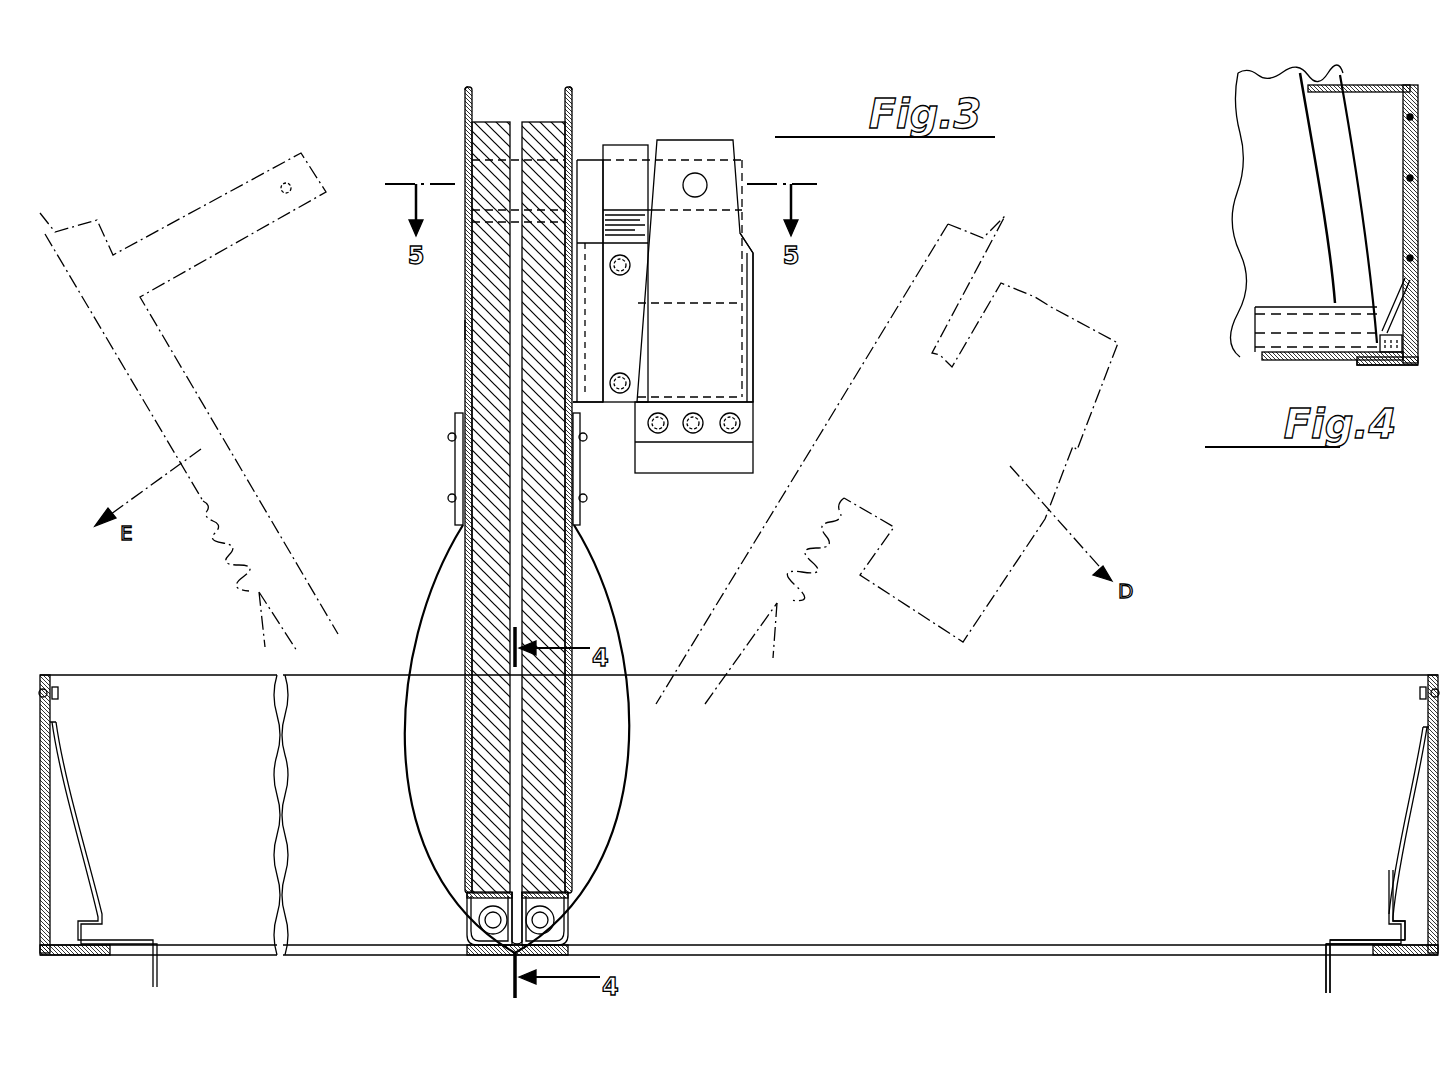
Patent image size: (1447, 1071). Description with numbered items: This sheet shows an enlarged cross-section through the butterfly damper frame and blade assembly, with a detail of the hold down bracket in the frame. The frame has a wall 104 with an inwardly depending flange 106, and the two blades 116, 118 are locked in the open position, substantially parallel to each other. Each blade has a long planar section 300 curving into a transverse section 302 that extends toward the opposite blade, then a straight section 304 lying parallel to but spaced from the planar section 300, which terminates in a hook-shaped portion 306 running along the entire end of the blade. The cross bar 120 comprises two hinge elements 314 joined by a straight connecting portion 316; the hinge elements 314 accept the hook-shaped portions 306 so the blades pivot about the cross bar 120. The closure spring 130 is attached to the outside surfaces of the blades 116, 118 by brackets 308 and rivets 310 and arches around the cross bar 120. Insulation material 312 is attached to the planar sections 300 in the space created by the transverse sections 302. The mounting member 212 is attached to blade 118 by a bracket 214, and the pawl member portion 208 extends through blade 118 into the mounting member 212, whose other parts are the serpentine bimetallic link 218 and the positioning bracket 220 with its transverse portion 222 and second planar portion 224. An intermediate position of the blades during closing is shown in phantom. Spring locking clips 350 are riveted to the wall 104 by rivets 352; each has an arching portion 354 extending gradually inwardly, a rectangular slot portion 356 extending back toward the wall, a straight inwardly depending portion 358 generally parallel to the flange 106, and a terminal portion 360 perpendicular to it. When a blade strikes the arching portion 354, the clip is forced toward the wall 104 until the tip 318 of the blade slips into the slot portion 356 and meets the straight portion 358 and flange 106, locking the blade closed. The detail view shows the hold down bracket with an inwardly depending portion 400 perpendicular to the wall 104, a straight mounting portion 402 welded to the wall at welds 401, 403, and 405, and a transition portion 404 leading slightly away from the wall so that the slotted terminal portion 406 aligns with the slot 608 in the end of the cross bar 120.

In FIG. 3, the wall 104 is at (48, 795).
In FIG. 4, the wall 104 is at (1413, 215).
In FIG. 3, the inwardly depending flange 106 is at (1400, 953).
In FIG. 4, the inwardly depending flange 106 is at (1378, 366).
In FIG. 3, the blade 116 is at (468, 110).
In FIG. 3, the blade 118 is at (540, 127).
In FIG. 3, the cross bar 120 is at (490, 953).
In FIG. 4, the cross bar 120 is at (1263, 335).
In FIG. 3, the closure spring 130 is at (435, 580).
In FIG. 3, the pawl member portion 208 is at (588, 170).
In FIG. 3, the mounting member 212 is at (710, 138).
In FIG. 3, the bracket 214 is at (590, 395).
In FIG. 3, the serpentine bimetallic link 218 is at (728, 270).
In FIG. 3, the positioning bracket 220 is at (757, 290).
In FIG. 3, the transverse portion 222 is at (742, 235).
In FIG. 3, the second planar portion 224 is at (630, 148).
In FIG. 3, the planar section 300 is at (465, 333).
In FIG. 3, the transverse section 302 is at (460, 903).
In FIG. 3, the straight section 304 is at (545, 885).
In FIG. 3, the hook-shaped portion 306 is at (476, 930).
In FIG. 3, the brackets 308 is at (455, 512).
In FIG. 3, the rivets 310 is at (451, 437).
In FIG. 3, the insulation material 312 is at (493, 130).
In FIG. 3, the hinge elements 314 is at (556, 915).
In FIG. 3, the straight connecting portion 316 is at (568, 952).
In FIG. 3, the tip 318 is at (467, 88).
In FIG. 3, the spring locking clip 350 is at (105, 820).
In FIG. 3, the rivets 352 is at (60, 694).
In FIG. 3, the arching portion 354 is at (1389, 868).
In FIG. 3, the rectangular slot portion 356 is at (1400, 935).
In FIG. 3, the straight inwardly depending portion 358 is at (1340, 948).
In FIG. 3, the terminal portion 360 is at (1325, 976).
In FIG. 4, the inwardly depending portion 400 is at (1362, 86).
In FIG. 4, the weld 401 is at (1406, 116).
In FIG. 4, the straight mounting portion 402 is at (1402, 138).
In FIG. 4, the weld 403 is at (1407, 178).
In FIG. 4, the transition portion 404 is at (1397, 297).
In FIG. 4, the weld 405 is at (1406, 258).
In FIG. 4, the slotted terminal portion 406 is at (1350, 353).
In FIG. 4, the slot 608 is at (1403, 366).